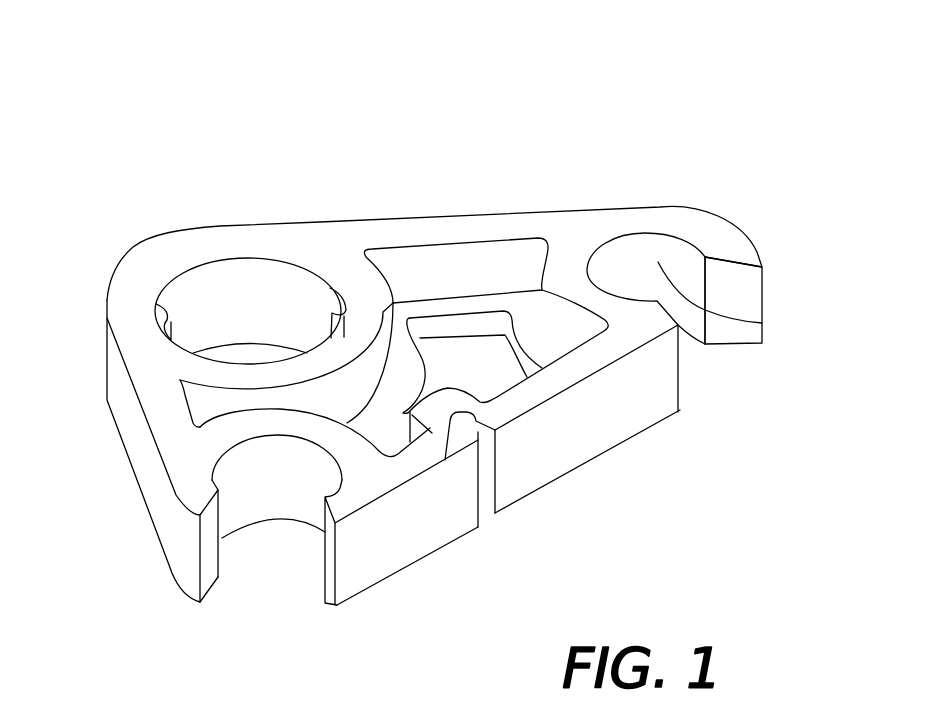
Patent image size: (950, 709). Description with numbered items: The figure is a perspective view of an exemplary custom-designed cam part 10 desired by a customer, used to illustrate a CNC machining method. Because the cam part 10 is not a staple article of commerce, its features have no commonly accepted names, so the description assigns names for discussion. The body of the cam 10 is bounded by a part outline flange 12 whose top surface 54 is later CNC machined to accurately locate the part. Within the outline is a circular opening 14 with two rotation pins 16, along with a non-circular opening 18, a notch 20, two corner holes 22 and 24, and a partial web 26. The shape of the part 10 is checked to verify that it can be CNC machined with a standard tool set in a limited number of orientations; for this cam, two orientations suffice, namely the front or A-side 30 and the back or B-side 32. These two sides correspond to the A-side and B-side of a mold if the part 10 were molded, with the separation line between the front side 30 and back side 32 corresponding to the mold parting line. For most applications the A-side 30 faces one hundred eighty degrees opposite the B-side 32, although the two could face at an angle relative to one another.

The cam part 10 is at (300, 112).
The part outline flange 12 is at (157, 265).
The circular opening 14 is at (235, 288).
The rotation pins 16 is at (158, 302).
The non-circular opening 18 is at (457, 357).
The notch 20 is at (487, 477).
The corner hole 22 is at (282, 462).
The corner hole 24 is at (762, 323).
The partial web 26 is at (521, 317).
The front side (A-side) 30 is at (568, 240).
The back side (B-side) 32 is at (607, 453).
The top surface 54 is at (652, 225).